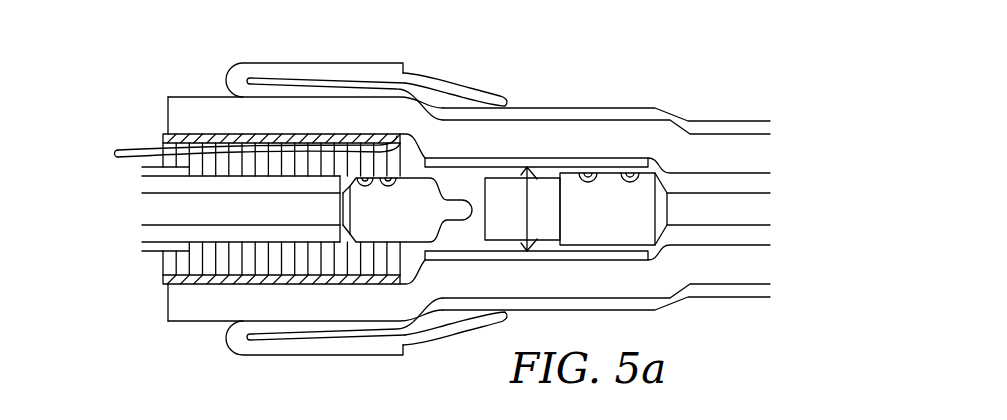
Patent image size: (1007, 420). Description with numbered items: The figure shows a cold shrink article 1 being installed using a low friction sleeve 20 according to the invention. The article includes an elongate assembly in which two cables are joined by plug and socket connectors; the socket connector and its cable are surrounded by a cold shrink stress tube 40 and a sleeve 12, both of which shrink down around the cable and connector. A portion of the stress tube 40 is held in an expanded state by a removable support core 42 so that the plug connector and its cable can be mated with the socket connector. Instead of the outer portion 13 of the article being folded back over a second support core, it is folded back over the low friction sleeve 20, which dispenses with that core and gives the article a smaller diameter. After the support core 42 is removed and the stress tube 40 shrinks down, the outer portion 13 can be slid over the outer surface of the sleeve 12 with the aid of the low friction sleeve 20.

The plug connector 1 is at (98, 190).
The sleeve 12 is at (597, 107).
The outer portion 13 is at (275, 62).
The low friction sleeve 20 is at (465, 86).
The cold shrink stress tube 40 is at (168, 100).
The removable support core 42 is at (207, 162).